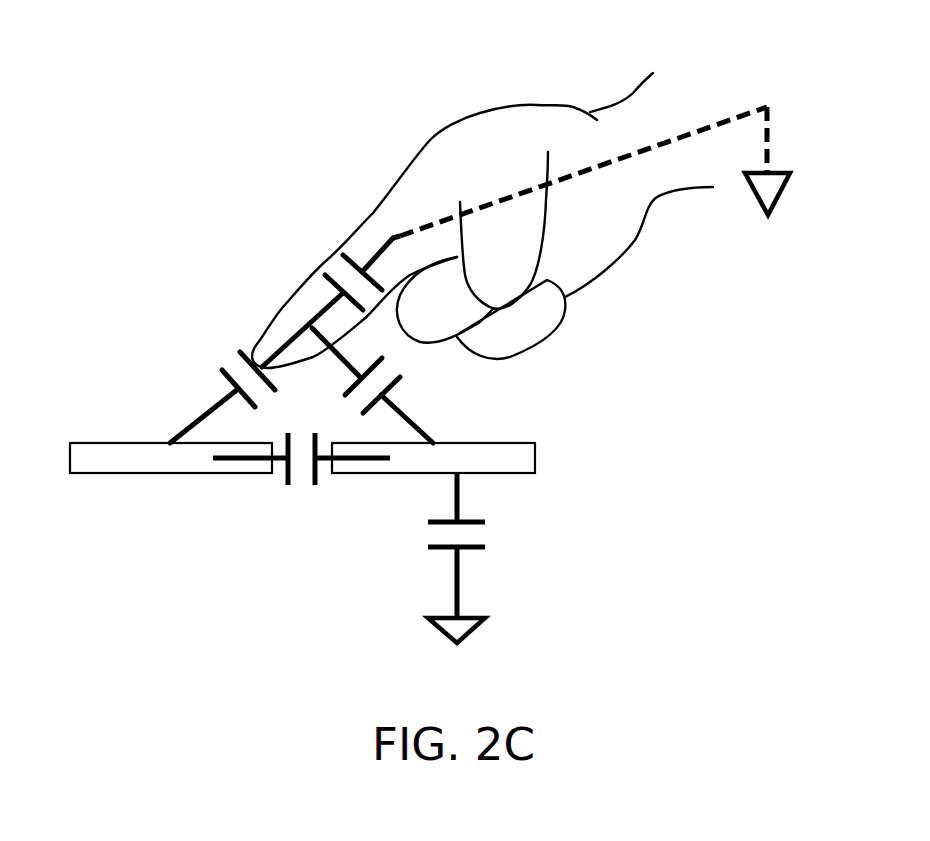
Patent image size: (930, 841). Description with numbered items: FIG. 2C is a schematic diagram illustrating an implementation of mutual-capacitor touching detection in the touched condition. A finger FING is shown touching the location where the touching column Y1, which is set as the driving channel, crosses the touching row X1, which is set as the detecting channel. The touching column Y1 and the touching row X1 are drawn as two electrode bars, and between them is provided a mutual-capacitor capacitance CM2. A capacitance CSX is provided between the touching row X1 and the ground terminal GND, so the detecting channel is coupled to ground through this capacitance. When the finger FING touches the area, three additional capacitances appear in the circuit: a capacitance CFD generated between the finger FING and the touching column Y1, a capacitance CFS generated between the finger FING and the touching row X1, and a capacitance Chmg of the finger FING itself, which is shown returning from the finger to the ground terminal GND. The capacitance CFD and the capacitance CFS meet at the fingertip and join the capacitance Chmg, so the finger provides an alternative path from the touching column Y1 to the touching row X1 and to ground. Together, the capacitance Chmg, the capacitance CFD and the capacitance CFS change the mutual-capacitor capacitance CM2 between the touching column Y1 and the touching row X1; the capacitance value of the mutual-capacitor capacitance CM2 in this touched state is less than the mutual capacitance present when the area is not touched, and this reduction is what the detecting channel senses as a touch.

The finger FING is at (503, 162).
The capacitance of the finger Chmg is at (340, 267).
The capacitance generated between the finger and the touching column CFD is at (222, 385).
The capacitance generated between the finger and the touching row CFS is at (379, 385).
The touching column Y1 is at (153, 457).
The touching row X1 is at (451, 458).
The mutual-capacitor capacitance CM2 is at (301, 480).
The capacitance between the touching row and the ground terminal CSX is at (482, 545).
The ground terminal GND is at (596, 386).